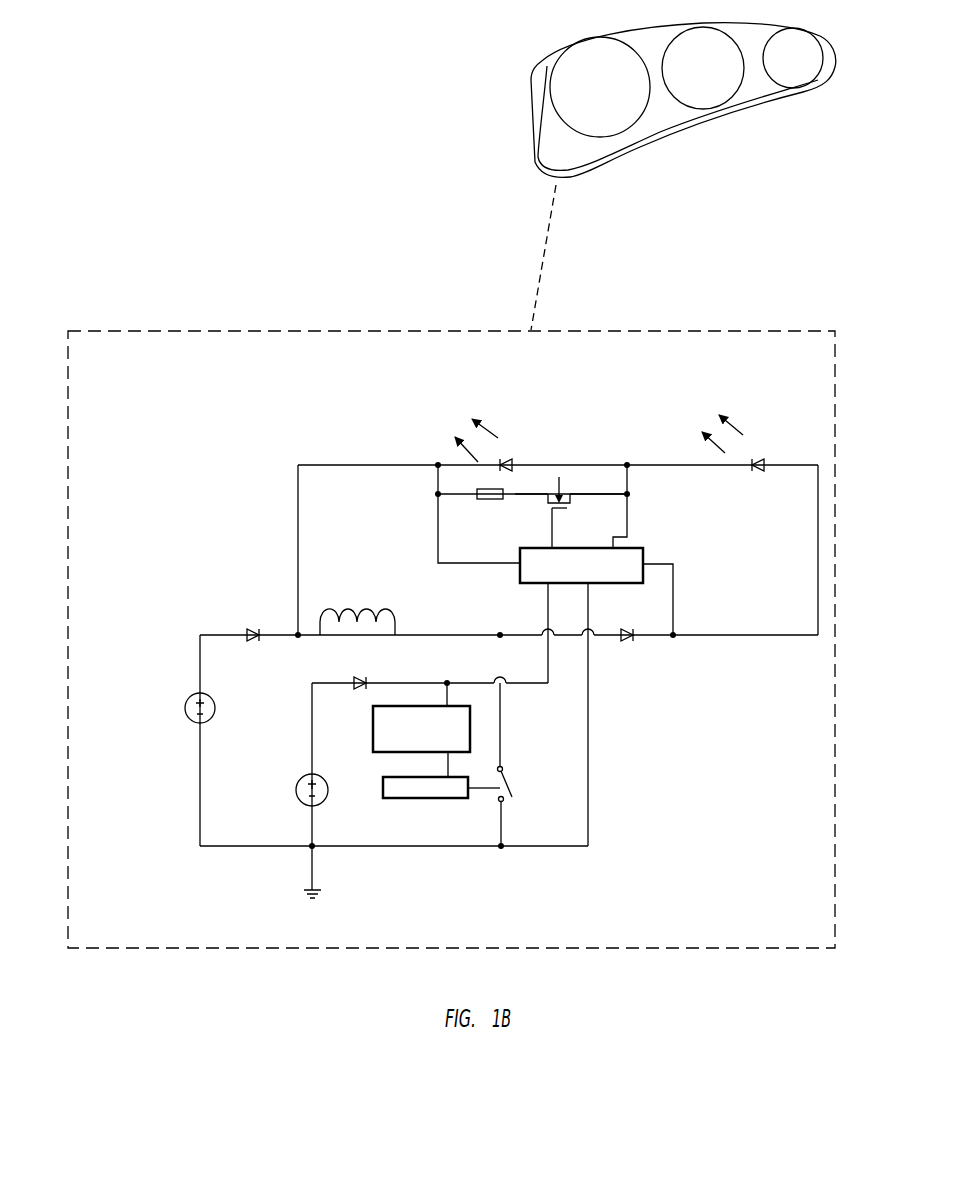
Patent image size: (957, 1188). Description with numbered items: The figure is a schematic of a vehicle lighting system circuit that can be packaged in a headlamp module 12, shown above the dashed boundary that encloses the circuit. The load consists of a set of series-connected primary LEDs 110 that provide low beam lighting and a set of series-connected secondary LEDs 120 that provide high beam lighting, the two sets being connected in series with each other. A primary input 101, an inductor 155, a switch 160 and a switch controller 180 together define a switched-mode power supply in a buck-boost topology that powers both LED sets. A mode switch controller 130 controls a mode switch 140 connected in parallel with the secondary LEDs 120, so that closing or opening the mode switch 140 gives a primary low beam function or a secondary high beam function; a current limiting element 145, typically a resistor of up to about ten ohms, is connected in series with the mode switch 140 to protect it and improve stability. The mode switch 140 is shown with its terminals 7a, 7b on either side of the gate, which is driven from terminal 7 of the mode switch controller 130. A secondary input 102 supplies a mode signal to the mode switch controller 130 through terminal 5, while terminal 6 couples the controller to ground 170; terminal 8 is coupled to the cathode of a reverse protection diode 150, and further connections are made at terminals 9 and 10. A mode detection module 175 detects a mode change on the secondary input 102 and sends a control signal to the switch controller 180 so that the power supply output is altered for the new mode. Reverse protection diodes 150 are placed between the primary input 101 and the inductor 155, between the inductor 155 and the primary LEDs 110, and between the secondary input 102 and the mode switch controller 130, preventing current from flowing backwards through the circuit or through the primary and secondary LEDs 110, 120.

The headlamp module 12 is at (530, 110).
The primary LEDs 110 is at (753, 436).
The secondary LEDs 120 is at (499, 436).
The mode switch controller 130 is at (649, 536).
The mode switch 140 is at (563, 509).
The current limiting element 145 is at (488, 499).
The reverse protection diode 150 is at (253, 628).
The inductor 155 is at (350, 607).
The switch 160 is at (510, 783).
The ground 170 is at (318, 893).
The mode detection module 175 is at (371, 733).
The switch controller 180 is at (383, 788).
The primary input 101 is at (164, 755).
The secondary input 102 is at (273, 841).
The terminal 5 is at (540, 633).
The terminal 6 is at (596, 714).
The terminal 7 is at (561, 529).
The transistor terminal 7a is at (531, 482).
The transistor terminal 7b is at (598, 482).
The terminal 8 is at (658, 589).
The controller pin 9 is at (479, 530).
The automobile 10 is at (610, 522).